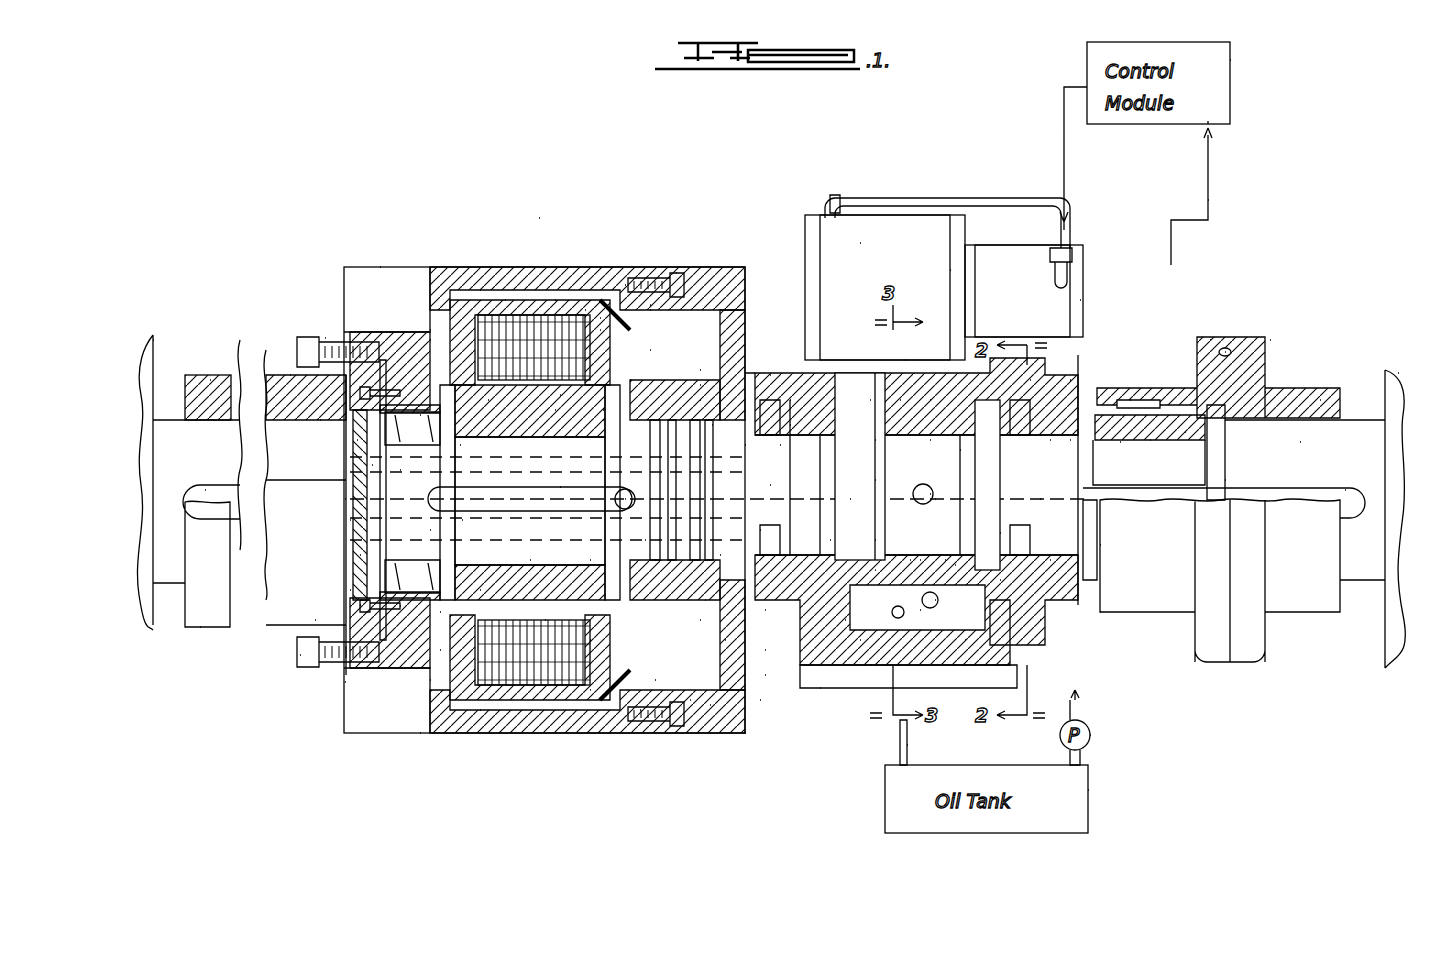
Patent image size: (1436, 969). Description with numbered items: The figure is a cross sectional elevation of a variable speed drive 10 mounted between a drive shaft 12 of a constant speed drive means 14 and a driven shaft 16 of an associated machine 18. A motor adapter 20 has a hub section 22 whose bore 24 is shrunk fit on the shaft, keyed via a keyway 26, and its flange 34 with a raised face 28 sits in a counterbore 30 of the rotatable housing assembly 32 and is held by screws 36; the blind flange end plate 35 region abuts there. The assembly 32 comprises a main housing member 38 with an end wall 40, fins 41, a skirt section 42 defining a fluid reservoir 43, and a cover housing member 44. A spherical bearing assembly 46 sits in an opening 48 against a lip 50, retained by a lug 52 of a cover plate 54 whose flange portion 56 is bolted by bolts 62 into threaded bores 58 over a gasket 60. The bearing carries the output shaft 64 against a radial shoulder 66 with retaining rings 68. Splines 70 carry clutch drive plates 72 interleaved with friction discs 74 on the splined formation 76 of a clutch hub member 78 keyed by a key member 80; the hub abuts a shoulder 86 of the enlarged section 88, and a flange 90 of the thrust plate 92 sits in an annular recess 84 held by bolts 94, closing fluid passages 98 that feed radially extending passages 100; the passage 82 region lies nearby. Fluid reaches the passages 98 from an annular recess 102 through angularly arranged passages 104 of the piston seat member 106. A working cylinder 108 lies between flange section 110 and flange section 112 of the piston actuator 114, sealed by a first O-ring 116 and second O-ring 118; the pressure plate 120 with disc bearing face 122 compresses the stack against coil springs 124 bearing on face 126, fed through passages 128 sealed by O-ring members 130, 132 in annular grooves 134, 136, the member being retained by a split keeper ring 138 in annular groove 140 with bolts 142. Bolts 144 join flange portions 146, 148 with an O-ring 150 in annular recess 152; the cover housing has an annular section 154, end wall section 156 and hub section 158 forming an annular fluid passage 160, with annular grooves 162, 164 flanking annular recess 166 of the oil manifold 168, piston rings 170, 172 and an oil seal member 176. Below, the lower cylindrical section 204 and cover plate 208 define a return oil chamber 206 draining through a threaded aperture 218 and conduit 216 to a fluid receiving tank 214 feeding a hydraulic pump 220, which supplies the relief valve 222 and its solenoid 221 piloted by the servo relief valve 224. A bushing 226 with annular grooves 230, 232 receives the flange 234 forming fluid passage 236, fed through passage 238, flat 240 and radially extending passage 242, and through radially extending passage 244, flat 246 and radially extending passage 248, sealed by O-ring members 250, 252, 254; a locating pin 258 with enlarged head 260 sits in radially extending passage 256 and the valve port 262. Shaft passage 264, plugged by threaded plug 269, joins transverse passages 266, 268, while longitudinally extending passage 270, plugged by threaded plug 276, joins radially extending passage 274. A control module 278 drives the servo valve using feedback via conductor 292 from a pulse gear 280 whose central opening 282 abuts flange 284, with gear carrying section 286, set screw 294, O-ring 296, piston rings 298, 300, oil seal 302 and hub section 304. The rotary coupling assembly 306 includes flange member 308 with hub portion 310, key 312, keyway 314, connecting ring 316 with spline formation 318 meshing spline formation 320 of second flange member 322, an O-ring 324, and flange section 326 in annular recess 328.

The variable speed drive 10 is at (547, 213).
The drive shaft 12 is at (295, 446).
The constant speed drive means 14 is at (153, 340).
The driven shaft 16 is at (1312, 470).
The associated machine 18 is at (1398, 373).
The motor adapter 20 is at (200, 627).
The hub section 22 is at (290, 375).
The bore 24 is at (210, 380).
The keyway 26 is at (205, 490).
The raised face 28 is at (350, 590).
The counterbore 30 is at (350, 370).
The rotatable housing assembly 32 is at (380, 267).
The flange 34 is at (325, 338).
The end plate 35 is at (345, 682).
The screws 36 is at (300, 655).
The main housing member 38 is at (480, 710).
The end wall 40 is at (430, 330).
The fins 41 is at (420, 733).
The skirt section 42 is at (480, 290).
The fluid reservoir 43 is at (640, 710).
The cover housing member 44 is at (440, 612).
The spherical bearing assembly 46 is at (357, 440).
The opening 48 is at (420, 415).
The lip 50 is at (470, 565).
The lug 52 is at (360, 555).
The cover plate 54 is at (350, 520).
The flange portion 56 is at (315, 620).
The threaded bores 58 is at (360, 605).
The gasket 60 is at (430, 340).
The bolts 62 is at (370, 395).
The output shaft 64 is at (1042, 513).
The radial shoulder 66 is at (430, 530).
The retaining rings 68 is at (400, 470).
The splines 70 is at (585, 310).
The clutch drive plates 72 is at (505, 300).
The friction discs 74 is at (555, 300).
The splined formation 76 is at (603, 410).
The clutch hub member 78 is at (580, 565).
The key member 80 is at (530, 560).
The passage 82 is at (560, 487).
The annular recess 84 is at (488, 400).
The shoulder 86 is at (460, 445).
The enlarged section 88 is at (462, 520).
The flange 90 is at (480, 590).
The thrust plate 92 is at (440, 650).
The bolts 94 is at (430, 680).
The fluid passages 98 is at (555, 410).
The radially extending passages 100 is at (520, 392).
The annular recess 102 is at (625, 499).
The angularly arranged passages 104 is at (560, 395).
The piston seat member 106 is at (700, 620).
The working cylinder 108 is at (700, 370).
The flange section 110 is at (700, 400).
The flange section 112 is at (725, 640).
The piston actuator 114 is at (650, 350).
The first O-ring 116 is at (630, 380).
The second O-ring 118 is at (700, 385).
The pressure plate 120 is at (600, 318).
The disc bearing face 122 is at (600, 330).
The coil springs 124 is at (770, 375).
The face 126 is at (603, 420).
The passages 128 is at (712, 425).
The O-ring member 130 is at (745, 445).
The O-ring member 132 is at (655, 560).
The annular groove 134 is at (645, 540).
The annular groove 136 is at (760, 530).
The split keeper ring 138 is at (720, 555).
The annular groove 140 is at (770, 485).
The bolts 142 is at (705, 600).
The bolts 144 is at (676, 273).
The flange portion 146 is at (625, 285).
The flange portion 148 is at (650, 305).
The O-ring 150 is at (650, 310).
The annular recess 152 is at (760, 555).
The annular section 154 is at (710, 705).
The end wall section 156 is at (760, 700).
The hub section 158 is at (780, 445).
The annular fluid passage 160 is at (830, 435).
The annular groove 162 is at (790, 400).
The annular groove 164 is at (790, 425).
The annular recess 166 is at (888, 320).
The oil manifold 168 is at (1070, 380).
The piston ring 170 is at (765, 650).
The piston ring 172 is at (765, 675).
The oil seal member 176 is at (765, 610).
The lower cylindrical section 204 is at (985, 610).
The return oil chamber 206 is at (980, 660).
The cover plate 208 is at (820, 688).
The fluid receiving tank 214 is at (1088, 790).
The conduit 216 is at (907, 745).
The threaded aperture 218 is at (870, 665).
The hydraulic pump 220 is at (1090, 735).
The solenoid 221 is at (950, 270).
The relief valve 222 is at (870, 243).
The servo relief valve 224 is at (1080, 300).
The bushing 226 is at (845, 620).
The annular groove 230 is at (920, 560).
The annular groove 232 is at (910, 560).
The flange 234 is at (875, 540).
The fluid passage 236 is at (930, 440).
The passage 238 is at (870, 400).
The flat 240 is at (900, 400).
The radially extending passage 242 is at (875, 440).
The radially extending passage 244 is at (905, 360).
The flat 246 is at (930, 400).
The radially extending passage 248 is at (930, 494).
The O-ring member 250 is at (875, 570).
The O-ring member 252 is at (860, 640).
The O-ring member 254 is at (1000, 580).
The radially extending passage 256 is at (955, 565).
The locating pin 258 is at (945, 560).
The enlarged head 260 is at (935, 600).
The valve 262 is at (920, 610).
The longitudinally extending passage 264 is at (830, 540).
The transverse passage 266 is at (590, 560).
The transverse passage 268 is at (935, 499).
The threaded plug 269 is at (345, 499).
The longitudinally extending passage 270 is at (455, 499).
The radially extending passage 274 is at (875, 480).
The threaded plug 276 is at (372, 465).
The control module 278 is at (1230, 60).
The pulse gear 280 is at (1050, 560).
The central opening 282 is at (1100, 548).
The flange 284 is at (960, 450).
The gear carrying section 286 is at (1030, 380).
The conductor 292 is at (1208, 200).
The set screw 294 is at (1070, 440).
The O-ring 296 is at (1000, 530).
The piston ring 298 is at (1040, 435).
The piston ring 300 is at (1040, 620).
The oil seal 302 is at (1050, 440).
The hub section 304 is at (1100, 612).
The rotary coupling assembly 306 is at (1274, 329).
The flange member 308 is at (1265, 392).
The hub portion 310 is at (1320, 400).
The key 312 is at (1225, 480).
The keyway 314 is at (1345, 490).
The connecting ring 316 is at (1185, 432).
The spline formation 318 is at (1150, 440).
The spline formation 320 is at (1130, 400).
The second flange member 322 is at (1210, 340).
The O-ring 324 is at (1120, 442).
The flange section 326 is at (1160, 405).
The annular recess 328 is at (1225, 352).